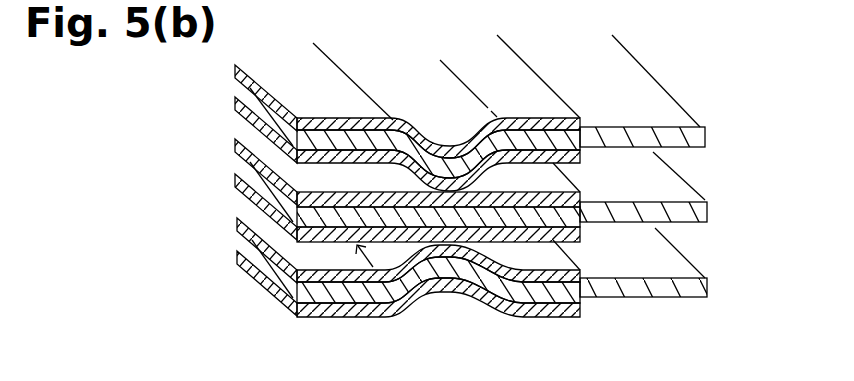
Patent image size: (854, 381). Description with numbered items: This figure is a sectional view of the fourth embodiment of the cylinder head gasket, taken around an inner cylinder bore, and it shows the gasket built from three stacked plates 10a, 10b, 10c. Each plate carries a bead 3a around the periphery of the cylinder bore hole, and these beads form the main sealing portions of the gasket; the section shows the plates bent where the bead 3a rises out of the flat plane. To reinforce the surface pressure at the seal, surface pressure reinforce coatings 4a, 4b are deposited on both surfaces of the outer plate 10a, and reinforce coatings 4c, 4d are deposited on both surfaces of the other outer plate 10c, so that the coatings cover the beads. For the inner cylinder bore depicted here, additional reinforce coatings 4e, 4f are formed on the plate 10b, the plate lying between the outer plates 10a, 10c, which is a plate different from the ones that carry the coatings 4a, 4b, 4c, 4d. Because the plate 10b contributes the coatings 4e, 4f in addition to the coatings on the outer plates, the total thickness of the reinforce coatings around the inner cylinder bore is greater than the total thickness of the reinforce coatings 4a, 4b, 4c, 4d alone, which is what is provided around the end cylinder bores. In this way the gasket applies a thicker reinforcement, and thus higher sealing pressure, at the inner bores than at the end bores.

The bead 3a is at (399, 96).
The surface pressure reinforce coating 4a is at (235, 65).
The surface pressure reinforce coating 4b is at (235, 97).
The surface pressure reinforce coating 4c is at (240, 244).
The surface pressure reinforce coating 4d is at (287, 283).
The surface pressure reinforce coating 4e is at (235, 139).
The surface pressure reinforce coating 4f is at (235, 174).
The plate 10a is at (645, 127).
The plate 10b is at (650, 203).
The plate 10c is at (662, 297).